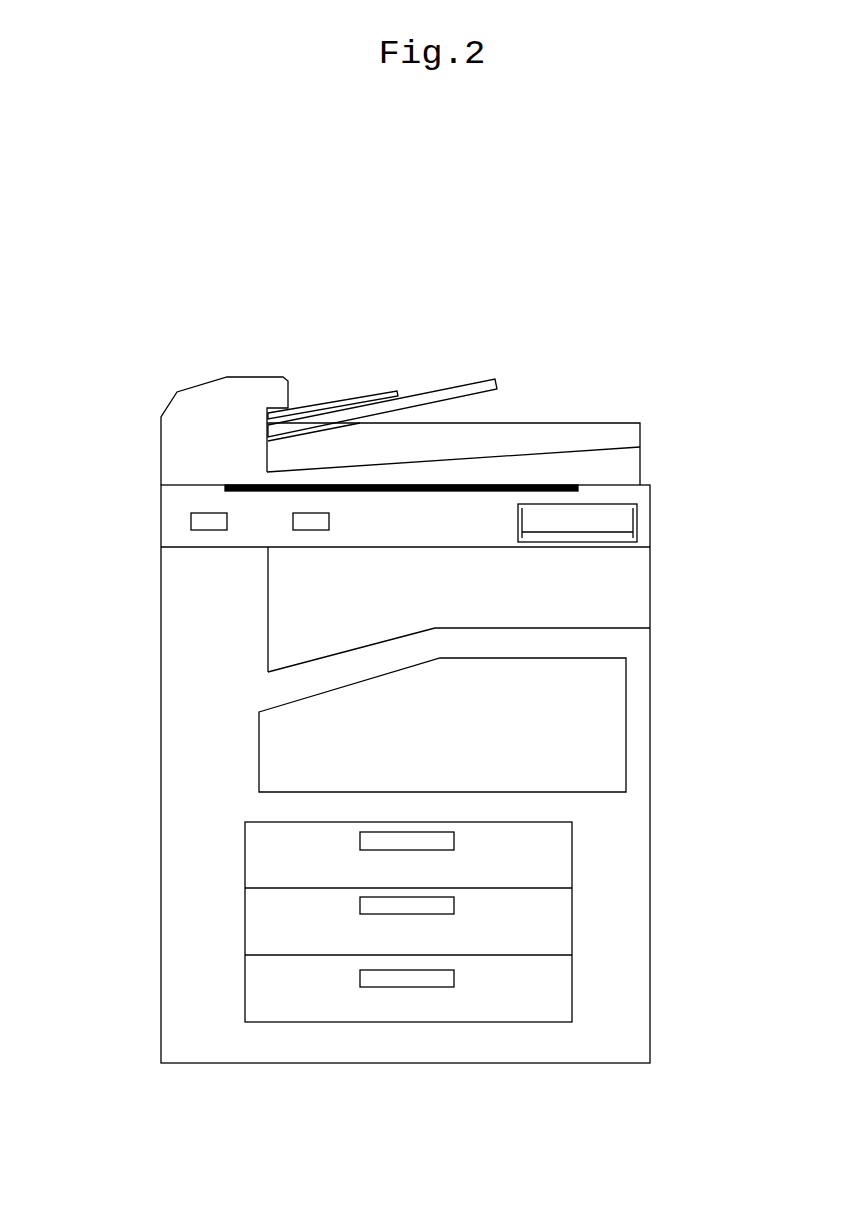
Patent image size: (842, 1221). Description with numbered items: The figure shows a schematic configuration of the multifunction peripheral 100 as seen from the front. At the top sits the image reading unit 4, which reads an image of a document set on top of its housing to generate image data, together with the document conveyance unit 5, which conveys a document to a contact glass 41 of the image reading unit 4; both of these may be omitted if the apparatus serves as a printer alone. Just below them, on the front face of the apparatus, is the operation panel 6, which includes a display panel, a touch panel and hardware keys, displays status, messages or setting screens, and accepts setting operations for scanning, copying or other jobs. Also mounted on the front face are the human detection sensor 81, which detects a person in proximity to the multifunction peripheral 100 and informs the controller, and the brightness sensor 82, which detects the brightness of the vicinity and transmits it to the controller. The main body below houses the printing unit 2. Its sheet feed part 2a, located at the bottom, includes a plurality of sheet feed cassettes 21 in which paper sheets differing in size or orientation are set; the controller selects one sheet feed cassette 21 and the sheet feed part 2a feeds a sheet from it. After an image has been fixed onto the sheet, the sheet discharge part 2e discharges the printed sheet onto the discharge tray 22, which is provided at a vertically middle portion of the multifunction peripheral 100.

The multifunction peripheral 100 is at (130, 318).
The printing unit 2 is at (658, 668).
The sheet feed part 2a is at (602, 848).
The sheet discharge part 2e is at (590, 618).
The sheet feed cassettes 21 is at (573, 990).
The discharge tray 22 is at (312, 660).
The image reading unit 4 is at (538, 447).
The contact glass 41 is at (363, 485).
The document conveyance unit 5 is at (177, 447).
The operation panel 6 is at (641, 503).
The human detection sensor 81 is at (192, 518).
The brightness sensor 82 is at (295, 520).